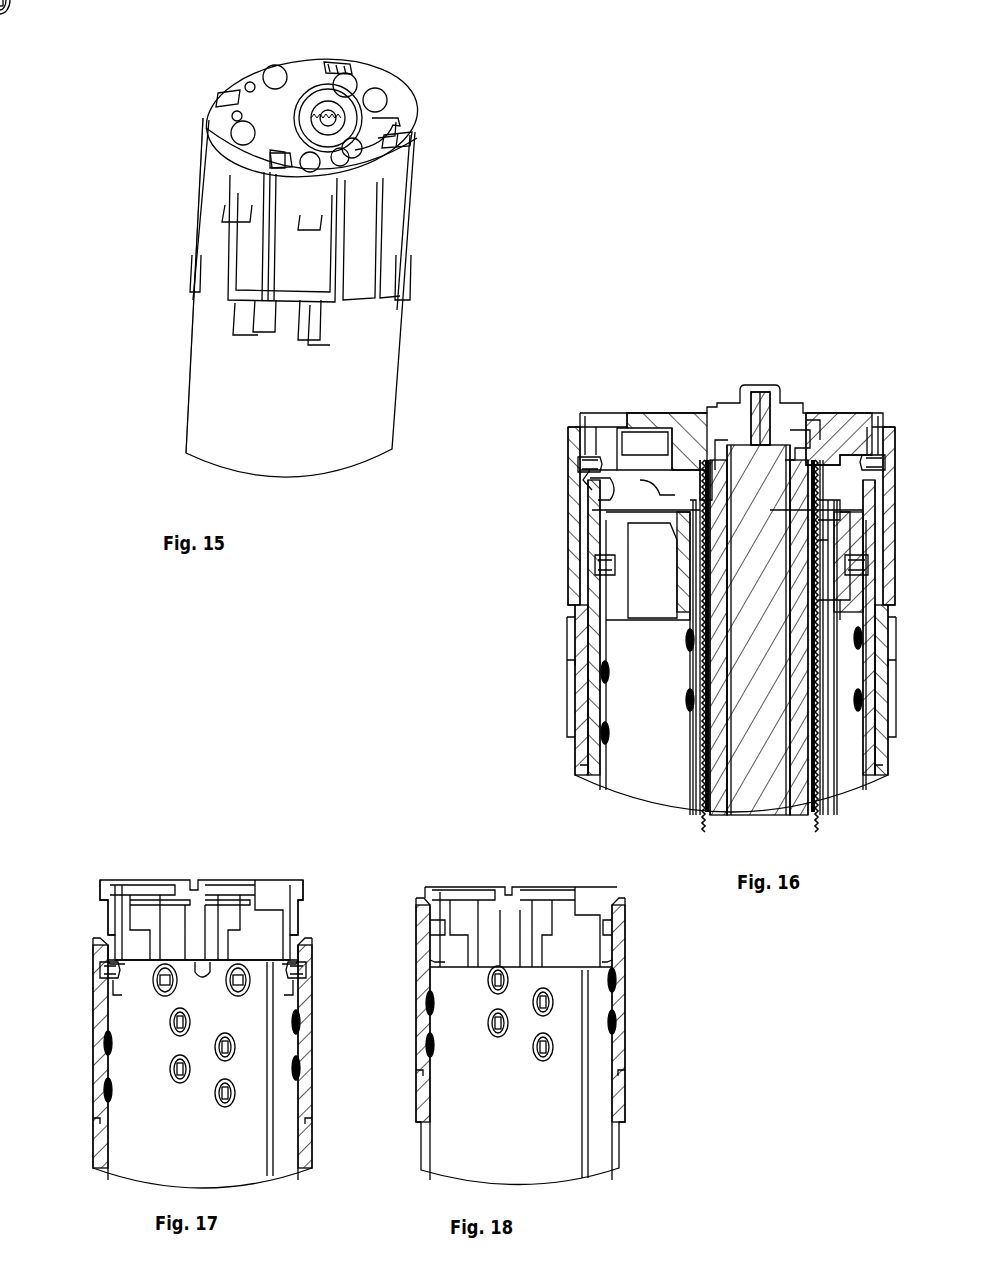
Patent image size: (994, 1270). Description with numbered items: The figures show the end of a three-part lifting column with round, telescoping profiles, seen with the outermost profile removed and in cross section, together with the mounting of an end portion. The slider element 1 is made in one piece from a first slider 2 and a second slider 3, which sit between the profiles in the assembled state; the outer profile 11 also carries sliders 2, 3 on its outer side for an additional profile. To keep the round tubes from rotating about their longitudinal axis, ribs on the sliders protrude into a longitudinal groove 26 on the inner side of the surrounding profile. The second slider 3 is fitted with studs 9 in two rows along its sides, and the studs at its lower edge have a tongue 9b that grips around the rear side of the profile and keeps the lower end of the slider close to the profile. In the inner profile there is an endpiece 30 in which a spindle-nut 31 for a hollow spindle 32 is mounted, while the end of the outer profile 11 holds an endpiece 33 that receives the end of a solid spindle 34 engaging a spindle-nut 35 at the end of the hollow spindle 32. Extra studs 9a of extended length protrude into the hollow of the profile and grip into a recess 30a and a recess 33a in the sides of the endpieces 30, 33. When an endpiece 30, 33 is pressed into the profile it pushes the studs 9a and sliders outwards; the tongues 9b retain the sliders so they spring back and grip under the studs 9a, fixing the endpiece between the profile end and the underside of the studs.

In FIG. 15, the slider element 1 is at (370, 273).
In FIG. 16, the slider element 1 is at (567, 604).
In FIG. 17, the slider element 1 is at (93, 1055).
In FIG. 18, the slider element 1 is at (630, 1018).
In FIG. 16, the first slider 2 is at (567, 672).
In FIG. 17, the first slider 2 is at (93, 1125).
In FIG. 16, the second slider 3 is at (566, 543).
In FIG. 17, the second slider 3 is at (95, 990).
In FIG. 17, the studs 9 is at (228, 1092).
In FIG. 16, the extra studs 9a is at (585, 462).
In FIG. 17, the extra studs 9a is at (100, 965).
In FIG. 17, the tongue 9b is at (247, 983).
In FIG. 15, the outer profile 11 is at (302, 243).
In FIG. 16, the longitudinal groove 26 is at (583, 478).
In FIG. 16, the endpiece 30 is at (855, 602).
In FIG. 16, the recess 30a is at (848, 598).
In FIG. 16, the spindle-nut 31 is at (822, 533).
In FIG. 16, the hollow spindle 32 is at (808, 778).
In FIG. 15, the endpiece 33 is at (402, 115).
In FIG. 16, the endpiece 33 is at (690, 418).
In FIG. 17, the endpiece 33 is at (228, 890).
In FIG. 15, the recess 33a is at (332, 65).
In FIG. 16, the recess 33a is at (598, 414).
In FIG. 17, the recess 33a is at (116, 900).
In FIG. 15, the solid spindle 34 is at (345, 105).
In FIG. 16, the solid spindle 34 is at (762, 393).
In FIG. 16, the spindle-nut 35 is at (820, 430).